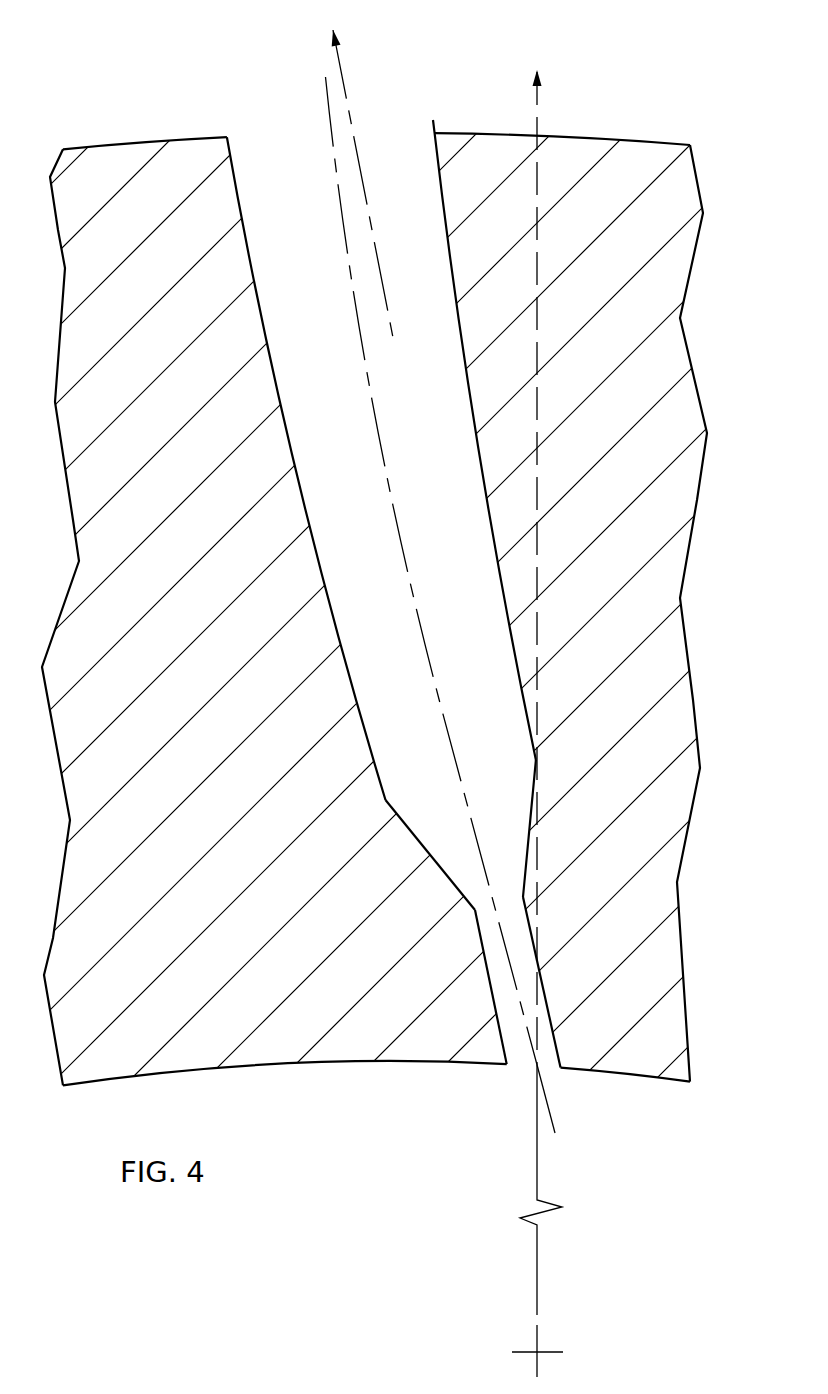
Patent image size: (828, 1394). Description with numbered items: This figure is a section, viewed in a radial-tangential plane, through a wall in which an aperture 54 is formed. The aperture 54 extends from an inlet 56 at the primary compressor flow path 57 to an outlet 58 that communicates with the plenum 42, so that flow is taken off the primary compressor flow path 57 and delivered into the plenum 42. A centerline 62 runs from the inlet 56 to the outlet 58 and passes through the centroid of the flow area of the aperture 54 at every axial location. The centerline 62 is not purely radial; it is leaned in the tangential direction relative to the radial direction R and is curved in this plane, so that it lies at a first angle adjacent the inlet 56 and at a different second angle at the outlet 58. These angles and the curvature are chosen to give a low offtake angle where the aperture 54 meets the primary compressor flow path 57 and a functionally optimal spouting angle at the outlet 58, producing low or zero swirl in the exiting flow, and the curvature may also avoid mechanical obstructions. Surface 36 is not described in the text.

The plenum 42 is at (260, 122).
The inner (cold side) surface of wall 36 is at (137, 1071).
The primary compressor flow path 57 is at (618, 1123).
The outlet 58 is at (396, 120).
The aperture 54 is at (432, 878).
The inlet 56 is at (523, 1072).
The centerline 62 is at (386, 464).
The radial direction R is at (442, 690).